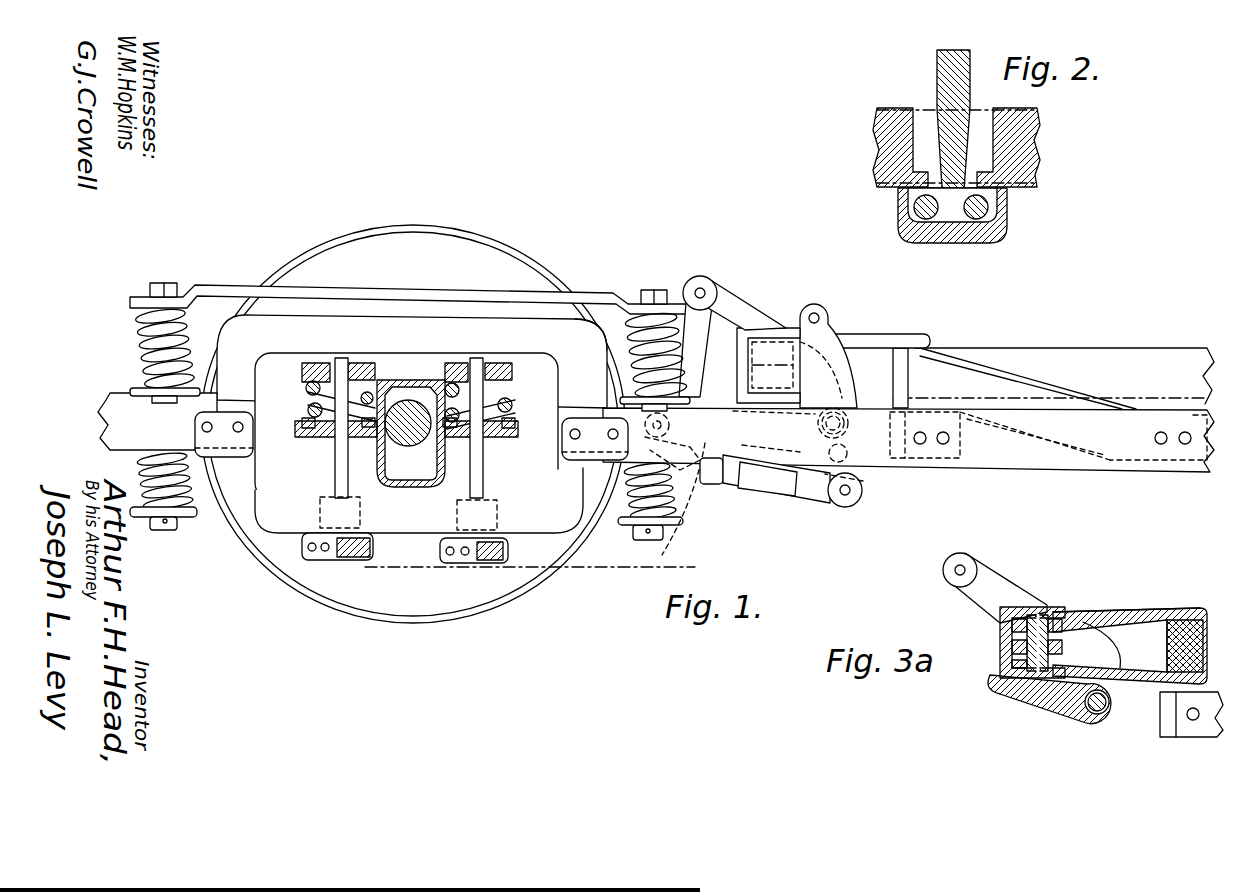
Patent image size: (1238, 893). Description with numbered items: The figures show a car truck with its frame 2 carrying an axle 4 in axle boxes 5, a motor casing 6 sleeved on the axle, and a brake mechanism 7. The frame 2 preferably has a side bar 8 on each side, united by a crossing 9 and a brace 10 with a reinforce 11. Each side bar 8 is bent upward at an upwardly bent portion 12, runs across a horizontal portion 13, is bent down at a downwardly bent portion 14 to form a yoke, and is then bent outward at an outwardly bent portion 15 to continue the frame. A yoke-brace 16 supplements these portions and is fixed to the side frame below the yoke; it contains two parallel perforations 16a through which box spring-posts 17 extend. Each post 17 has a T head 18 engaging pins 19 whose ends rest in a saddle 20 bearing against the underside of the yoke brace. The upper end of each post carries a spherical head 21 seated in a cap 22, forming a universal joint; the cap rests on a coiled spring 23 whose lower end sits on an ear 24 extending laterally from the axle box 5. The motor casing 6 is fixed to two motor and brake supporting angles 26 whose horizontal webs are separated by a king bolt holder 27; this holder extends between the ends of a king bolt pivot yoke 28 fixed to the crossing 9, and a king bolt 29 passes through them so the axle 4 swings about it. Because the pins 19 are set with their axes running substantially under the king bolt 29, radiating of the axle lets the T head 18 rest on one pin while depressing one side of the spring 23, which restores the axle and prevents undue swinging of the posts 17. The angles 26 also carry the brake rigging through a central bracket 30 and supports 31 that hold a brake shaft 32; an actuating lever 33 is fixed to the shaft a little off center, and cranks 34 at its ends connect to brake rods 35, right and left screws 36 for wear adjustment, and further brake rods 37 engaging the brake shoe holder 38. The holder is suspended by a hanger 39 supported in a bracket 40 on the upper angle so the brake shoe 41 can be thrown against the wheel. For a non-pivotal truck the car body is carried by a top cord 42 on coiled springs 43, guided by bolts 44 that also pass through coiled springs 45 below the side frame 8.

In FIG. 1, the frame 2 is at (323, 457).
In FIG. 1, the axle 4 is at (425, 447).
In FIG. 1, the axle box 5 is at (410, 488).
In FIG. 1, the motor casing 6 is at (406, 542).
In FIG. 1, the brake mechanism 7 is at (858, 487).
In FIG. 1, the side bar 8 is at (1167, 464).
In FIG. 1, the crossing 9 is at (899, 350).
In FIG. 3A, the crossing 9 is at (1158, 628).
In FIG. 1, the brace 10 is at (962, 377).
In FIG. 3A, the brace 10 is at (1192, 609).
In FIG. 1, the reinforce 11 is at (1104, 355).
In FIG. 1, the upwardly bent portion 12 is at (595, 424).
In FIG. 1, the horizontal portion 13 is at (577, 337).
In FIG. 1, the downwardly bent portion 14 is at (412, 361).
In FIG. 1, the outwardly bent portion 15 is at (219, 413).
In FIG. 1, the yoke-brace 16 is at (394, 433).
In FIG. 2, the perforation 16a is at (923, 113).
In FIG. 1, the box spring-post 17 is at (336, 456).
In FIG. 2, the box spring-post 17 is at (937, 58).
In FIG. 1, the T head 18 is at (356, 562).
In FIG. 2, the T head 18 is at (952, 235).
In FIG. 1, the pin 19 is at (302, 549).
In FIG. 2, the pin 19 is at (910, 199).
In FIG. 1, the saddle 20 is at (385, 517).
In FIG. 2, the saddle 20 is at (973, 172).
In FIG. 1, the spherical head 21 is at (370, 361).
In FIG. 1, the cap 22 is at (376, 354).
In FIG. 1, the coiled spring 23 is at (305, 391).
In FIG. 1, the ear 24 is at (300, 438).
In FIG. 1, the motor and brake supporting angle 26 is at (786, 327).
In FIG. 3A, the motor and brake supporting angle 26 is at (1068, 616).
In FIG. 1, the king bolt holder 27 is at (868, 332).
In FIG. 3A, the king bolt holder 27 is at (1128, 611).
In FIG. 3A, the king bolt pivot yoke 28 is at (1056, 642).
In FIG. 3A, the king bolt 29 is at (1047, 607).
In FIG. 1, the central bracket 30 is at (740, 398).
In FIG. 3A, the central bracket 30 is at (993, 682).
In FIG. 1, the support 31 is at (846, 372).
In FIG. 3A, the support 31 is at (1116, 645).
In FIG. 1, the brake shaft 32 is at (845, 423).
In FIG. 3A, the brake shaft 32 is at (1087, 714).
In FIG. 1, the actuating lever 33 is at (826, 318).
In FIG. 1, the crank 34 is at (847, 507).
In FIG. 1, the brake rod 35 is at (815, 499).
In FIG. 1, the screw 36 is at (786, 475).
In FIG. 1, the brake rod 37 is at (750, 455).
In FIG. 1, the brake shoe holder 38 is at (591, 522).
In FIG. 1, the hanger 39 is at (703, 349).
In FIG. 1, the bracket 40 is at (740, 312).
In FIG. 3A, the bracket 40 is at (1008, 584).
In FIG. 1, the brake shoe 41 is at (419, 500).
In FIG. 1, the top cord 42 is at (438, 290).
In FIG. 1, the coiled spring 43 is at (140, 357).
In FIG. 1, the bolt 44 is at (166, 278).
In FIG. 1, the coiled spring 45 is at (686, 494).